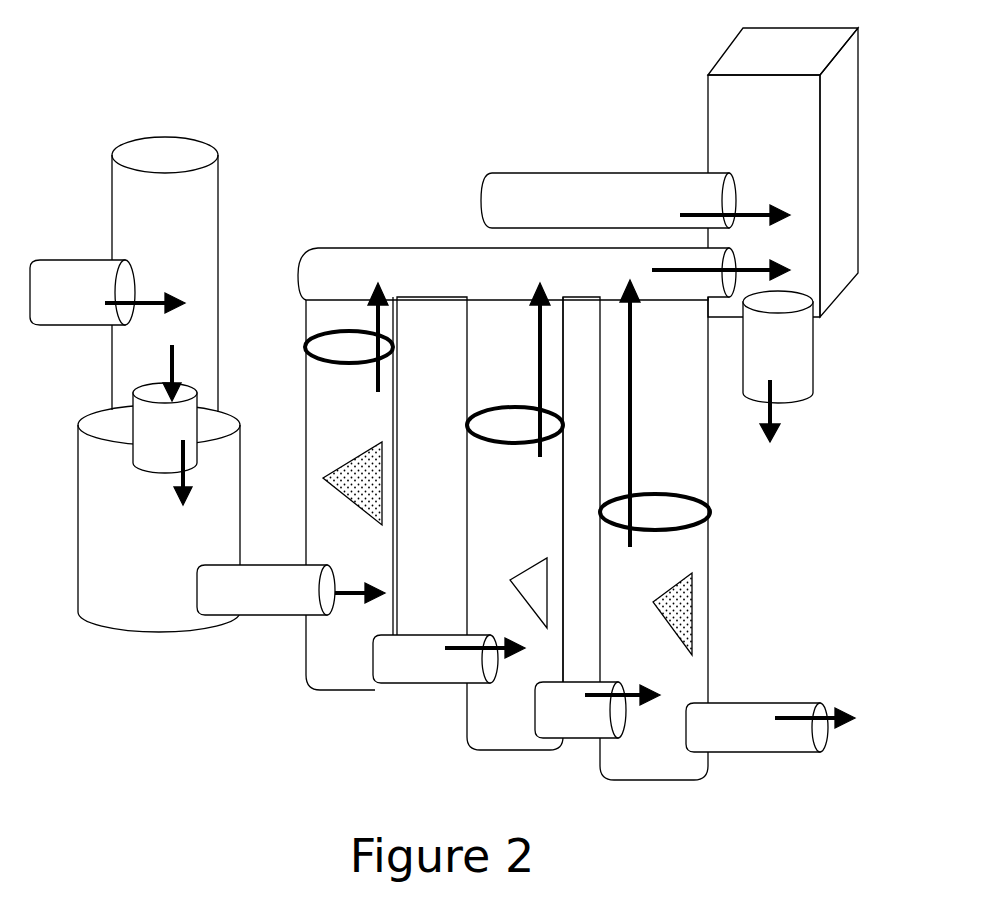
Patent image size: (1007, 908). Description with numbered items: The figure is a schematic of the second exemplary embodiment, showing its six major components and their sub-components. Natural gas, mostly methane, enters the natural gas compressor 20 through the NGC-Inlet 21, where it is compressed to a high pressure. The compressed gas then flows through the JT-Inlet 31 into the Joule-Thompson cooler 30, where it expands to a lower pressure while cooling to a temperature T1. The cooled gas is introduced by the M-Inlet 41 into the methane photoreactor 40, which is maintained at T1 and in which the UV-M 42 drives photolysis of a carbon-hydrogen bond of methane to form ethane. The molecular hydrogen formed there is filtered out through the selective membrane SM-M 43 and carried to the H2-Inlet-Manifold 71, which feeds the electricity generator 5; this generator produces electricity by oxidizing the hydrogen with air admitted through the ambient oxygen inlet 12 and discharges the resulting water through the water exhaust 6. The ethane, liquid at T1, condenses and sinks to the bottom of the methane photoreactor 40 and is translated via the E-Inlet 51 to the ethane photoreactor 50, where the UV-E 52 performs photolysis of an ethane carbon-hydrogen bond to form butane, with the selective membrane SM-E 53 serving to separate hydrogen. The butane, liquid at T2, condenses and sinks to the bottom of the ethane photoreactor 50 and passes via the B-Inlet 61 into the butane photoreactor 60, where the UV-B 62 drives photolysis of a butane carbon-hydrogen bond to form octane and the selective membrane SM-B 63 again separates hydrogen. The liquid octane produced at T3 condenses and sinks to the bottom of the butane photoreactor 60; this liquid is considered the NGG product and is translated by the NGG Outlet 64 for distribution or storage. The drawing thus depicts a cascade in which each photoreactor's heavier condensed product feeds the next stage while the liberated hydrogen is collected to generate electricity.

The electricity generator 5 is at (740, 100).
The water exhaust 6 is at (782, 390).
The ambient oxygen inlet 12 is at (526, 194).
The natural gas compressor 20 is at (162, 168).
The NGC-Inlet 21 is at (77, 270).
The Joule-Thompson cooler 30 is at (133, 599).
The JT-Inlet 31 is at (160, 412).
The methane photoreactor 40 is at (335, 381).
The M-Inlet 41 is at (226, 585).
The UV-M 42 is at (328, 475).
The SM-M 43 is at (316, 342).
The ethane photoreactor 50 is at (498, 467).
The E-Inlet 51 is at (380, 644).
The UV-E 52 is at (480, 589).
The SM-E 53 is at (491, 422).
The butane photoreactor 60 is at (668, 552).
The B-Inlet 61 is at (536, 714).
The UV-B 62 is at (683, 618).
The SM-B 63 is at (688, 510).
The NGG Outlet 64 is at (747, 708).
The H2-Inlet-Manifold 71 is at (440, 267).